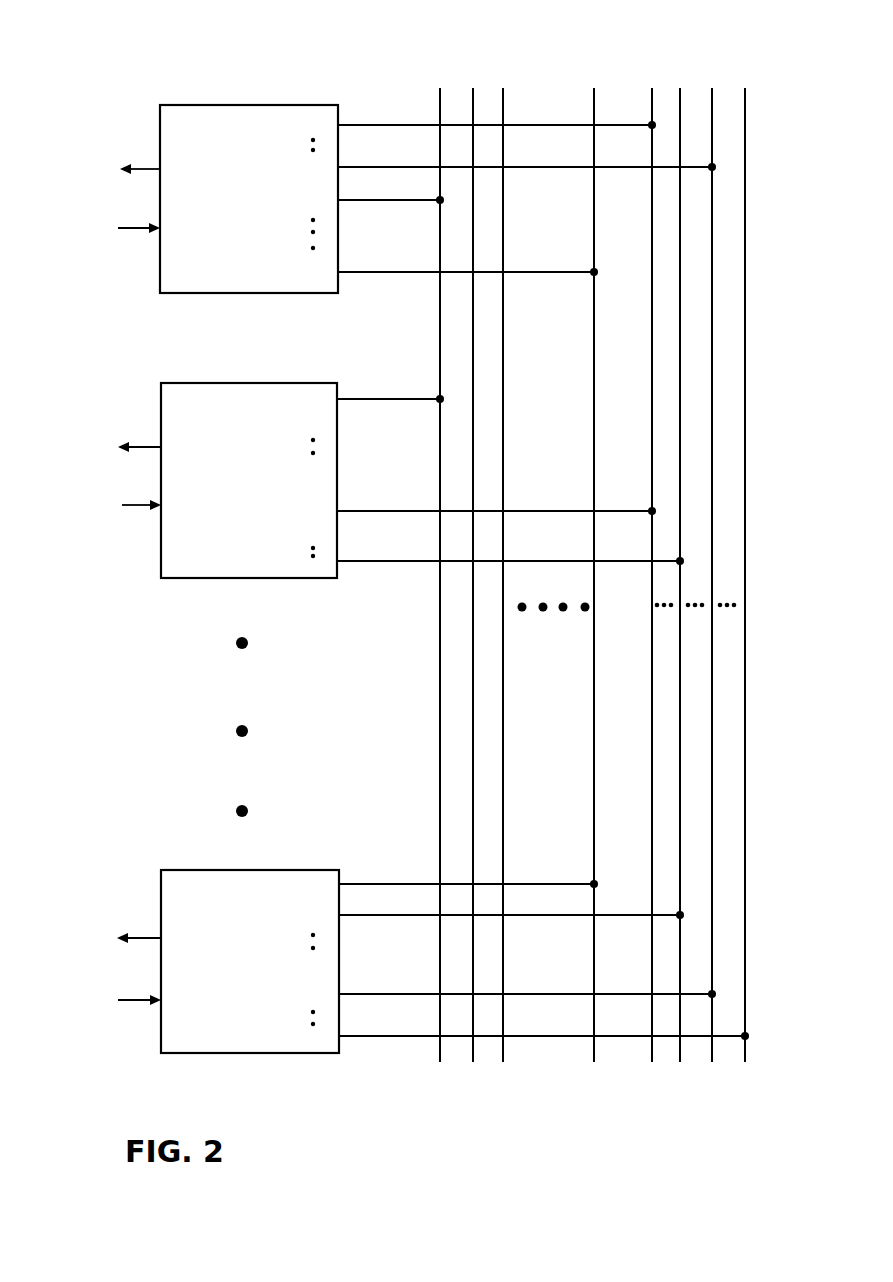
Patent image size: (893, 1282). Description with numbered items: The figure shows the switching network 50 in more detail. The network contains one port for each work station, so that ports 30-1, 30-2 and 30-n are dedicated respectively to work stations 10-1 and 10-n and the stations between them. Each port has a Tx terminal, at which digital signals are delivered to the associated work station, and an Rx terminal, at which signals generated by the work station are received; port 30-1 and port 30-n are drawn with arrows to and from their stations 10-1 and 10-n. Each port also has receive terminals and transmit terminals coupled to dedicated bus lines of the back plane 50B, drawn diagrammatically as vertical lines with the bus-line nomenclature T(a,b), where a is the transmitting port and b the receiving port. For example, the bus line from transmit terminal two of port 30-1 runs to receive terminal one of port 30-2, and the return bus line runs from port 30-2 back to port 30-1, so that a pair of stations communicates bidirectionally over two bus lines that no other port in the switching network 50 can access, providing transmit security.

The switching network 50 is at (772, 40).
The back plane 50B is at (762, 80).
The port 30-1 is at (255, 108).
The port 30-2 is at (258, 386).
The port 30-n is at (253, 1050).
The work station 10-1 is at (102, 202).
The work station 10-n is at (101, 972).